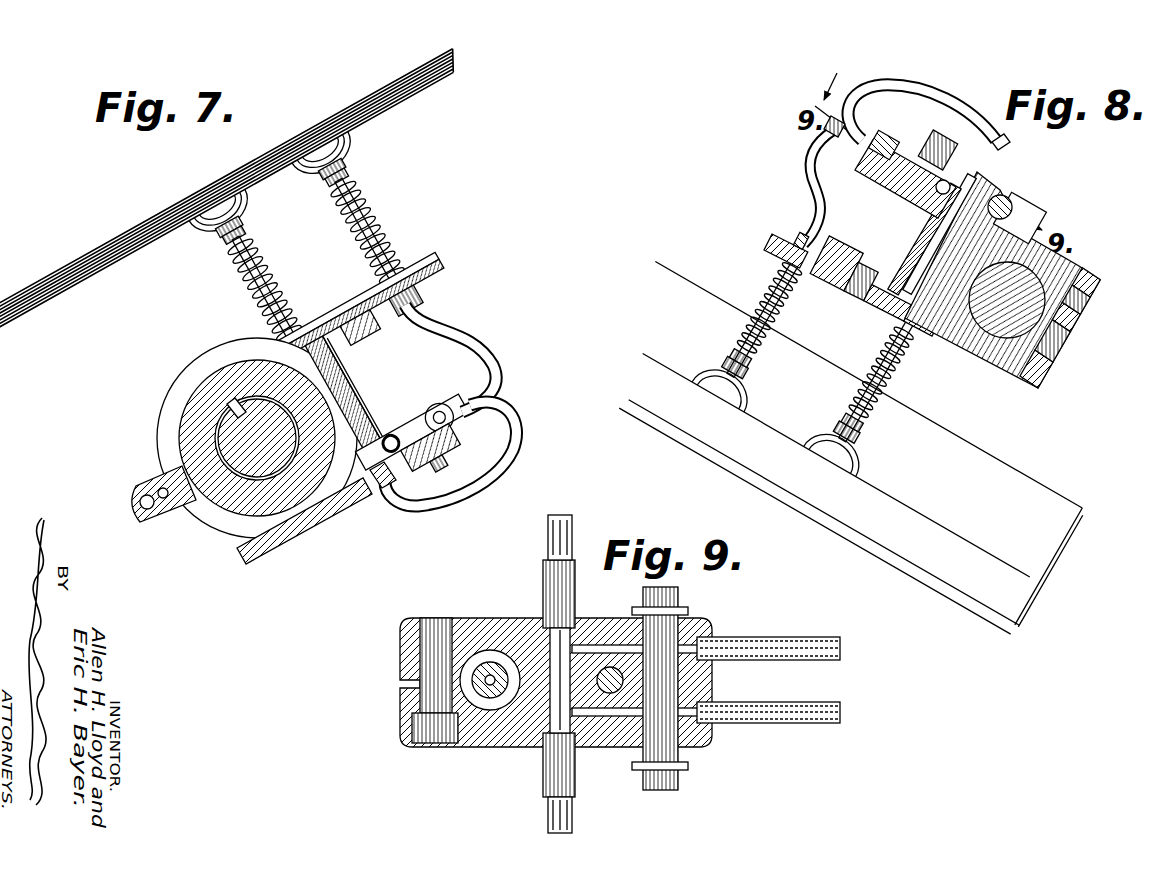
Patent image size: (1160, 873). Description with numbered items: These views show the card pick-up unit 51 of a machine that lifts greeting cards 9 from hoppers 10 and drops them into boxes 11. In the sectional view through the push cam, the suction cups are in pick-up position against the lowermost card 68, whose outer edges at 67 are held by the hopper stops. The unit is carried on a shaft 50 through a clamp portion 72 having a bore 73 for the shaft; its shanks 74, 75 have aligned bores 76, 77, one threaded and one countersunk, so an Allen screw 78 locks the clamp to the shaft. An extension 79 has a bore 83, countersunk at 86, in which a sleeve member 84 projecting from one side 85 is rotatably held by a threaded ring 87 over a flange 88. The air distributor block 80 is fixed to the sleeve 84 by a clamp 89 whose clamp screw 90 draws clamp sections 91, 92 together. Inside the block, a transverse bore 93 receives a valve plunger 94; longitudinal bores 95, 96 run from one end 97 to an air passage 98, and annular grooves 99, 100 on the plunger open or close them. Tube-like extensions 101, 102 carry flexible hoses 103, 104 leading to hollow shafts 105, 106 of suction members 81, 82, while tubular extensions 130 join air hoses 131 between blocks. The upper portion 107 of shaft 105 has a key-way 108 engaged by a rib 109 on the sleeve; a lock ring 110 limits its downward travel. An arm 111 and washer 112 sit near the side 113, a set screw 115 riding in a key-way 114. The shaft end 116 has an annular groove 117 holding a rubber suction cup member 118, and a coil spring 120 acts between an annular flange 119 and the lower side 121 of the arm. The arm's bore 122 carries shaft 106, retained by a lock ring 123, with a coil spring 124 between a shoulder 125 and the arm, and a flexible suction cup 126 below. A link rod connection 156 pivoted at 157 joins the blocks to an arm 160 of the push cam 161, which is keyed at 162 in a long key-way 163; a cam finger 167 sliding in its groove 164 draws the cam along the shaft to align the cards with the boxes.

In FIG. 7, the greeting cards 9 is at (418, 93).
In FIG. 8, the greeting cards 9 is at (915, 505).
In FIG. 7, the hoppers 10 is at (2, 338).
In FIG. 8, the boxes 11 is at (1020, 628).
In FIG. 7, the shaft 50 is at (238, 437).
In FIG. 8, the shaft 50 is at (1045, 275).
In FIG. 7, the card pick-up unit 51 is at (420, 274).
In FIG. 8, the card pick-up unit 51 is at (1038, 393).
In FIG. 7, the outer edge portion of lowermost card 67 is at (32, 318).
In FIG. 7, the lowermost card 68 is at (138, 250).
In FIG. 7, the clamp portion 72 is at (358, 378).
In FIG. 8, the clamp portion 72 is at (995, 365).
In FIG. 8, the bore 73 is at (1090, 320).
In FIG. 8, the shank 74 is at (1058, 377).
In FIG. 8, the shank 75 is at (1088, 290).
In FIG. 8, the bore 76 is at (1075, 355).
In FIG. 8, the bore 77 is at (1085, 340).
In FIG. 8, the Allen screw 78 is at (1082, 275).
In FIG. 7, the extension 79 is at (363, 392).
In FIG. 8, the extension 79 is at (918, 235).
In FIG. 7, the air distributor block 80 is at (455, 395).
In FIG. 8, the air distributor block 80 is at (1015, 232).
In FIG. 9, the air distributor block 80 is at (715, 636).
In FIG. 7, the suction member 81 is at (248, 285).
In FIG. 8, the suction member 81 is at (877, 367).
In FIG. 7, the suction member 82 is at (363, 230).
In FIG. 8, the suction member 82 is at (780, 325).
In FIG. 8, the bore 83 is at (890, 260).
In FIG. 7, the sleeve member 84 is at (392, 490).
In FIG. 8, the sleeve member 84 is at (1004, 196).
In FIG. 9, the sleeve member 84 is at (479, 661).
In FIG. 7, the side of extension 85 is at (388, 437).
In FIG. 8, the side of extension 85 is at (1032, 225).
In FIG. 8, the countersink 86 is at (936, 200).
In FIG. 8, the threaded ring 87 is at (925, 200).
In FIG. 8, the flange 88 is at (935, 215).
In FIG. 8, the clamp 89 is at (1022, 232).
In FIG. 9, the clamp 89 is at (409, 625).
In FIG. 8, the clamp screw 90 is at (1010, 220).
In FIG. 9, the clamp screw 90 is at (415, 684).
In FIG. 9, the clamp section 91 is at (400, 705).
In FIG. 9, the clamp section 92 is at (400, 650).
In FIG. 8, the transverse bore 93 is at (876, 172).
In FIG. 9, the transverse bore 93 is at (712, 680).
In FIG. 8, the valve plunger 94 is at (866, 158).
In FIG. 9, the valve plunger 94 is at (676, 608).
In FIG. 9, the longitudinal bore 95 is at (604, 666).
In FIG. 9, the longitudinal bore 96 is at (605, 752).
In FIG. 7, the end of block 97 is at (458, 425).
In FIG. 8, the end of block 97 is at (880, 135).
In FIG. 9, the end of block 97 is at (712, 696).
In FIG. 8, the air passage 98 is at (958, 168).
In FIG. 9, the air passage 98 is at (527, 735).
In FIG. 9, the annular groove 99 is at (702, 625).
In FIG. 9, the annular groove 100 is at (690, 735).
In FIG. 9, the tube-like extension 101 is at (742, 640).
In FIG. 8, the tube-like extension 102 is at (826, 131).
In FIG. 9, the tube-like extension 102 is at (734, 717).
In FIG. 7, the flexible hose 103 is at (515, 418).
In FIG. 8, the flexible hose 103 is at (925, 95).
In FIG. 9, the flexible hose 103 is at (842, 638).
In FIG. 7, the flexible hose 104 is at (505, 368).
In FIG. 8, the flexible hose 104 is at (806, 160).
In FIG. 9, the flexible hose 104 is at (842, 700).
In FIG. 7, the hollow shaft 105 is at (290, 300).
In FIG. 8, the hollow shaft 105 is at (866, 415).
In FIG. 7, the hollow shaft 106 is at (372, 215).
In FIG. 8, the hollow shaft 106 is at (772, 355).
In FIG. 8, the upper portion 107 is at (882, 245).
In FIG. 9, the upper portion 107 is at (521, 640).
In FIG. 9, the key-way 108 is at (497, 664).
In FIG. 9, the rib 109 is at (488, 668).
In FIG. 7, the lock ring 110 is at (375, 485).
In FIG. 8, the lock ring 110 is at (998, 180).
In FIG. 7, the arm 111 is at (398, 270).
In FIG. 8, the arm 111 is at (762, 250).
In FIG. 7, the washer 112 is at (315, 322).
In FIG. 8, the washer 112 is at (846, 310).
In FIG. 7, the side of extension 113 is at (340, 325).
In FIG. 8, the side of extension 113 is at (965, 375).
In FIG. 8, the key-way 114 is at (887, 352).
In FIG. 8, the set screw 115 is at (935, 352).
In FIG. 7, the end of hollow shaft 116 is at (250, 228).
In FIG. 8, the end of hollow shaft 116 is at (815, 420).
In FIG. 8, the annular groove 117 is at (815, 437).
In FIG. 7, the rubber suction cup member 118 is at (245, 205).
In FIG. 8, the rubber suction cup member 118 is at (852, 457).
In FIG. 7, the annular flange 119 is at (222, 236).
In FIG. 8, the annular flange 119 is at (852, 437).
In FIG. 7, the coil spring 120 is at (262, 250).
In FIG. 8, the coil spring 120 is at (822, 405).
In FIG. 8, the lower side of arm 121 is at (875, 330).
In FIG. 8, the bore 122 is at (775, 245).
In FIG. 7, the lock ring 123 is at (415, 305).
In FIG. 8, the lock ring 123 is at (798, 238).
In FIG. 7, the coil spring 124 is at (353, 182).
In FIG. 8, the coil spring 124 is at (742, 322).
In FIG. 7, the shoulder 125 is at (355, 165).
In FIG. 8, the shoulder 125 is at (722, 355).
In FIG. 7, the flexible suction cup 126 is at (348, 140).
In FIG. 8, the flexible suction cup 126 is at (692, 385).
In FIG. 9, the tubular extension 130 is at (541, 750).
In FIG. 7, the air hose 131 is at (420, 410).
In FIG. 9, the air hose 131 is at (566, 533).
In FIG. 7, the link rod connection 156 is at (445, 462).
In FIG. 8, the link rod connection 156 is at (905, 95).
In FIG. 8, the pivot connection 157 is at (960, 118).
In FIG. 9, the pivot connection 157 is at (587, 645).
In FIG. 7, the arm 160 is at (338, 508).
In FIG. 7, the push cam 161 is at (172, 398).
In FIG. 7, the key 162 is at (232, 408).
In FIG. 7, the key-way 163 is at (240, 425).
In FIG. 7, the groove 164 is at (252, 363).
In FIG. 7, the cam finger 167 is at (183, 515).